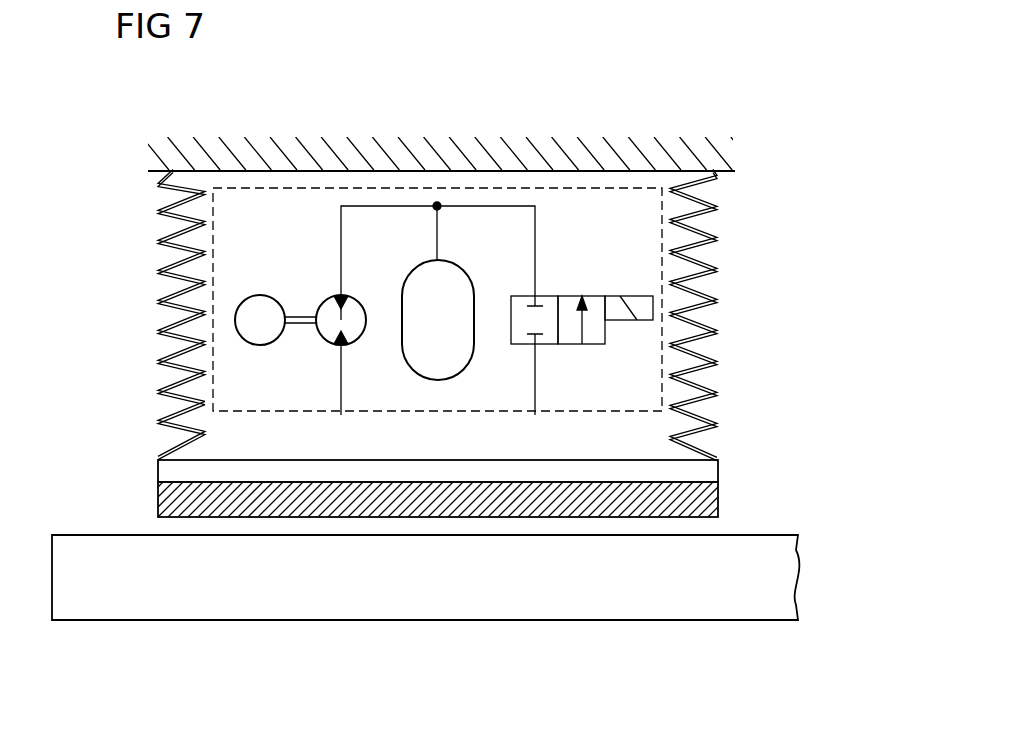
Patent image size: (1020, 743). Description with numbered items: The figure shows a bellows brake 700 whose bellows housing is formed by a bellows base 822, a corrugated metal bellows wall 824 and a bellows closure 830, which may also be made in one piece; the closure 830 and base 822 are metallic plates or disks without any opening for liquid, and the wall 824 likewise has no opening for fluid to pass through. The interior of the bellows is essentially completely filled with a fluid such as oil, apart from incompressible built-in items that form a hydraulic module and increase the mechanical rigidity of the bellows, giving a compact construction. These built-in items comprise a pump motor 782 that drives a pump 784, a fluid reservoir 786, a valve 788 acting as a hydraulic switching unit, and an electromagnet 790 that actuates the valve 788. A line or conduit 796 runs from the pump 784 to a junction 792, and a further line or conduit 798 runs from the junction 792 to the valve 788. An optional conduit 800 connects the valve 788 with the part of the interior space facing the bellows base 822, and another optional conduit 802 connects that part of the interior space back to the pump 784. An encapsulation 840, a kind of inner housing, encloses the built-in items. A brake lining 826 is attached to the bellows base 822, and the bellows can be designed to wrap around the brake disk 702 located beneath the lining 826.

The bellows brake 700 is at (146, 254).
The brake disk 702 is at (103, 533).
The pump motor 782 is at (244, 297).
The pump 784 is at (324, 297).
The fluid reservoir 786 is at (405, 284).
The valve 788 is at (550, 296).
The electromagnet 790 is at (630, 296).
The junction 792 is at (441, 208).
The line or conduit 796 is at (341, 222).
The line or conduit 798 is at (535, 222).
The line or conduit 800 is at (535, 378).
The line or conduit 802 is at (341, 378).
The bellows base 822 is at (212, 370).
The bellows wall 824 is at (175, 418).
The brake lining 826 is at (718, 505).
The bellows closure 830 is at (622, 170).
The encapsulation 840 is at (440, 411).